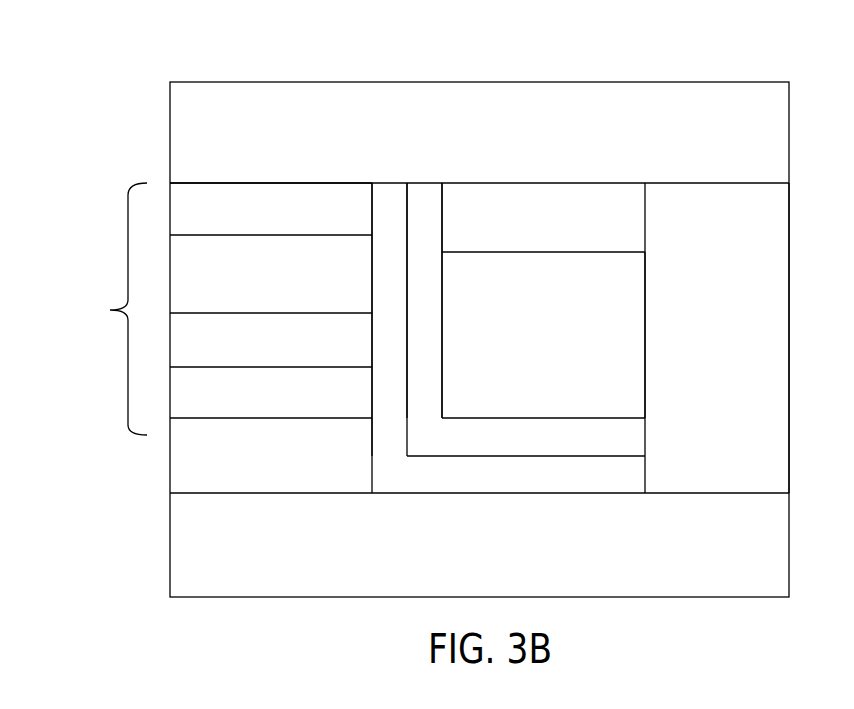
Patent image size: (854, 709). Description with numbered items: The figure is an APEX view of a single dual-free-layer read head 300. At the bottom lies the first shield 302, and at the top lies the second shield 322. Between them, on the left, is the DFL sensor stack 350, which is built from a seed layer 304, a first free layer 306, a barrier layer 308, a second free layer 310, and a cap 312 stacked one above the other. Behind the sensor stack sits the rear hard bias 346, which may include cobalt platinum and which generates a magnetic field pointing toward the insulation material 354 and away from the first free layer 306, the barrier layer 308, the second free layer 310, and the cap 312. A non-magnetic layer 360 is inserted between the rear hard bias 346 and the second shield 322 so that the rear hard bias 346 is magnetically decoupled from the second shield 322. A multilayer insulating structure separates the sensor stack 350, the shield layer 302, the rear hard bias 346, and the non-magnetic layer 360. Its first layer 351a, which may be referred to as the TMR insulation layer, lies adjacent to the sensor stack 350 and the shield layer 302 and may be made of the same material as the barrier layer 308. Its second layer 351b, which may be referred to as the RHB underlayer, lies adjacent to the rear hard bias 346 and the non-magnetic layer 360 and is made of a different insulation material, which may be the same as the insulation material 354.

The single read head 300 is at (218, 62).
The first shield 302 is at (511, 558).
The seed layer 304 is at (247, 481).
The first free layer 306 is at (249, 402).
The barrier layer 308 is at (251, 351).
The second free layer 310 is at (251, 287).
The cap 312 is at (251, 222).
The second shield 322 is at (515, 151).
The rear hard bias 346 is at (514, 335).
The DFL sensor stack 350 is at (100, 309).
The first layer 351a is at (388, 200).
The second layer 351b is at (427, 200).
The insulation material 354 is at (698, 335).
The non-magnetic layer 360 is at (514, 228).